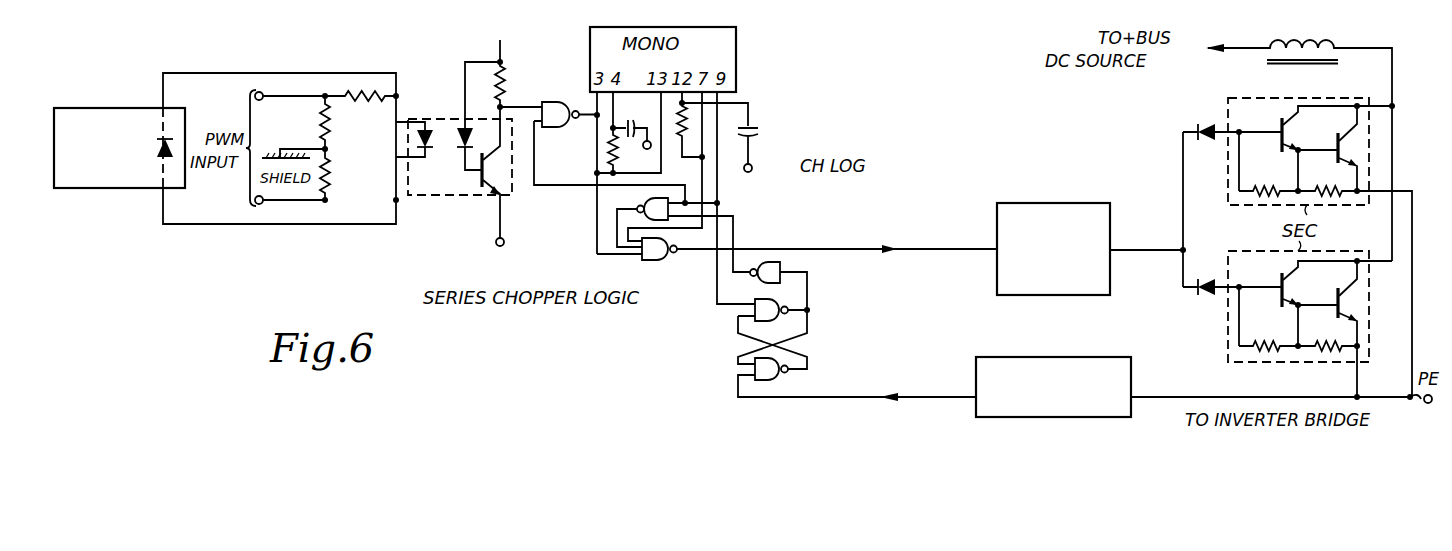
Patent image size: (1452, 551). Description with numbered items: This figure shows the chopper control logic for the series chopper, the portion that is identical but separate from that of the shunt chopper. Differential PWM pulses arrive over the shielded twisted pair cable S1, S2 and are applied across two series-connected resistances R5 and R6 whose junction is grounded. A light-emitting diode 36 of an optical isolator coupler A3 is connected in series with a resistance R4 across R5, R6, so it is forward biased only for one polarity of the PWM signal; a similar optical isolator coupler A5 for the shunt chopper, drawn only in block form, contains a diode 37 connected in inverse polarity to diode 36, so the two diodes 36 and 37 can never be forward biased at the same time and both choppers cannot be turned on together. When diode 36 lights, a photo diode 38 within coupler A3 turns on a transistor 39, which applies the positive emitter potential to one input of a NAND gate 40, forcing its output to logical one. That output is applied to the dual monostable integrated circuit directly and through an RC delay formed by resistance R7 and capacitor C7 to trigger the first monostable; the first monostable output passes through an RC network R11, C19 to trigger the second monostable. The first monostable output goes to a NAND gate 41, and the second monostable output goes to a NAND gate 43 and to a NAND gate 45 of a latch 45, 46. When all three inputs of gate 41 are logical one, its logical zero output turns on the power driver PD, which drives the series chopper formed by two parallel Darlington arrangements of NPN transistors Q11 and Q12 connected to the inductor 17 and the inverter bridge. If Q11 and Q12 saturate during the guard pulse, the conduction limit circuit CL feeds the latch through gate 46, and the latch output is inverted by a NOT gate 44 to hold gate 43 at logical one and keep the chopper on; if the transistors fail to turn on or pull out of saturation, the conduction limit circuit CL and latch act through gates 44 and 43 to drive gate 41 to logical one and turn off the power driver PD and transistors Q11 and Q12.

The inductor / filter choke 17 is at (1323, 29).
The light-emitting diode 36 is at (410, 135).
The diode 37 is at (160, 140).
The photo diode 38 is at (462, 126).
The transistor 39 is at (480, 186).
The NAND gate 40 is at (552, 103).
The NAND gate 41 is at (650, 260).
The NAND gate 43 is at (640, 205).
The NOT gate 44 is at (777, 262).
The NAND gate 45 is at (755, 307).
The NAND gate 46 is at (755, 372).
The optical isolator coupler A5 is at (112, 102).
The optical isolator coupler A3 is at (420, 205).
The resistance R4 is at (366, 90).
The resistance R5 is at (333, 120).
The resistance R6 is at (333, 172).
The resistance R7 is at (606, 152).
The resistance R11 is at (683, 139).
The capacitor C7 is at (641, 114).
The capacitor C19 is at (757, 130).
The NPN transistor Q11 is at (1337, 134).
The NPN transistor Q12 is at (1337, 289).
The power driver PD is at (1046, 203).
The conduction limit circuit CL is at (1062, 354).
The shielded cable wire S1 is at (292, 100).
The shielded cable wire S2 is at (298, 204).